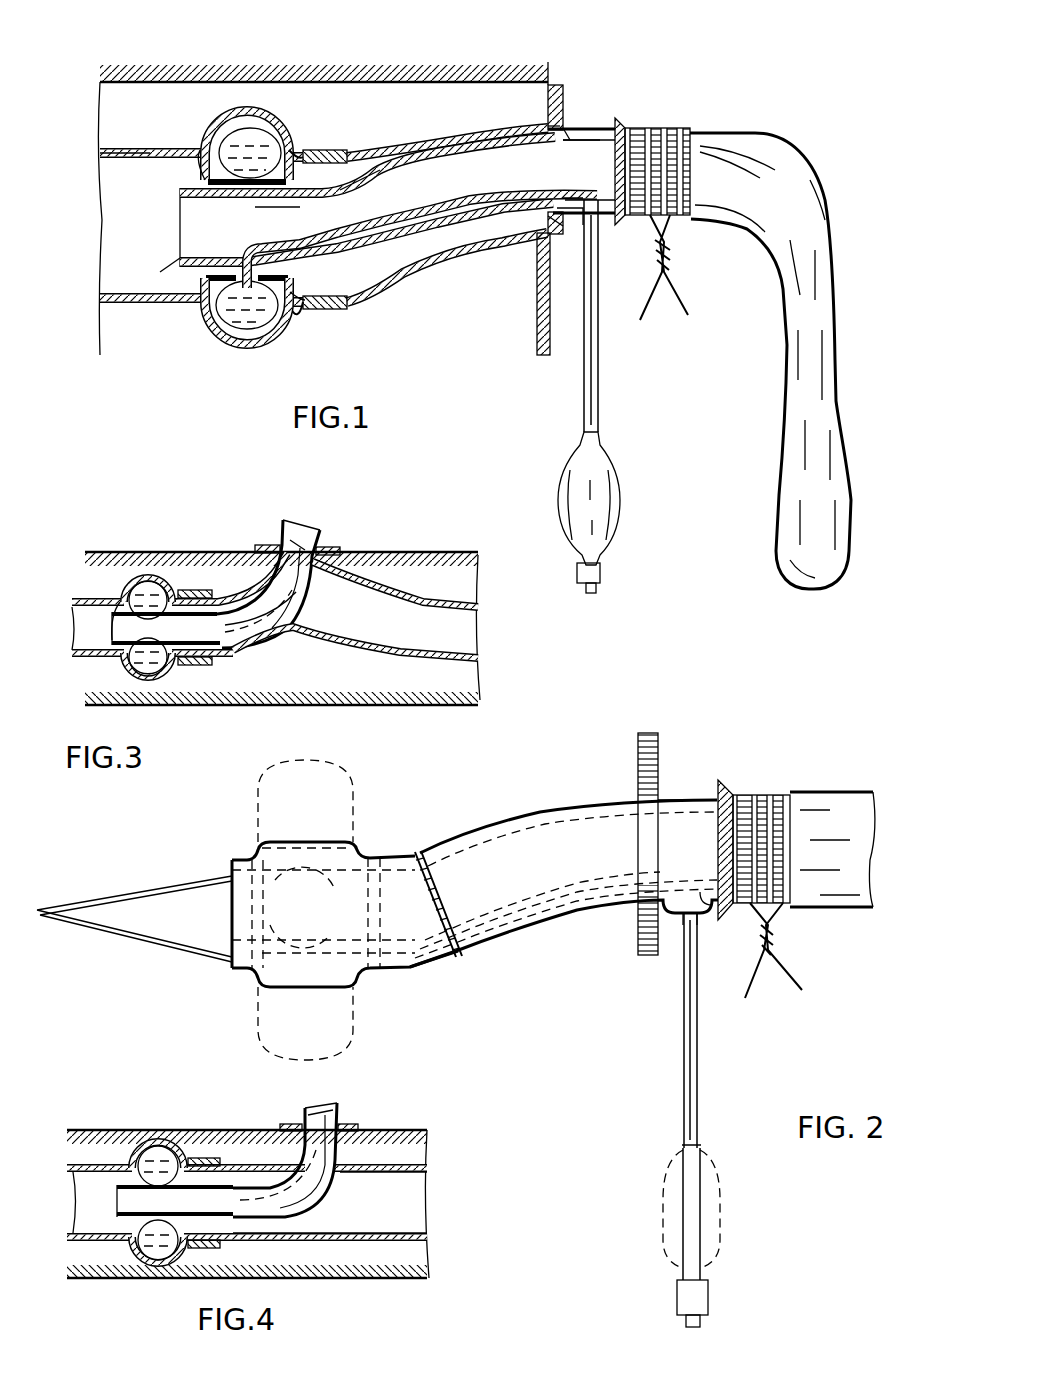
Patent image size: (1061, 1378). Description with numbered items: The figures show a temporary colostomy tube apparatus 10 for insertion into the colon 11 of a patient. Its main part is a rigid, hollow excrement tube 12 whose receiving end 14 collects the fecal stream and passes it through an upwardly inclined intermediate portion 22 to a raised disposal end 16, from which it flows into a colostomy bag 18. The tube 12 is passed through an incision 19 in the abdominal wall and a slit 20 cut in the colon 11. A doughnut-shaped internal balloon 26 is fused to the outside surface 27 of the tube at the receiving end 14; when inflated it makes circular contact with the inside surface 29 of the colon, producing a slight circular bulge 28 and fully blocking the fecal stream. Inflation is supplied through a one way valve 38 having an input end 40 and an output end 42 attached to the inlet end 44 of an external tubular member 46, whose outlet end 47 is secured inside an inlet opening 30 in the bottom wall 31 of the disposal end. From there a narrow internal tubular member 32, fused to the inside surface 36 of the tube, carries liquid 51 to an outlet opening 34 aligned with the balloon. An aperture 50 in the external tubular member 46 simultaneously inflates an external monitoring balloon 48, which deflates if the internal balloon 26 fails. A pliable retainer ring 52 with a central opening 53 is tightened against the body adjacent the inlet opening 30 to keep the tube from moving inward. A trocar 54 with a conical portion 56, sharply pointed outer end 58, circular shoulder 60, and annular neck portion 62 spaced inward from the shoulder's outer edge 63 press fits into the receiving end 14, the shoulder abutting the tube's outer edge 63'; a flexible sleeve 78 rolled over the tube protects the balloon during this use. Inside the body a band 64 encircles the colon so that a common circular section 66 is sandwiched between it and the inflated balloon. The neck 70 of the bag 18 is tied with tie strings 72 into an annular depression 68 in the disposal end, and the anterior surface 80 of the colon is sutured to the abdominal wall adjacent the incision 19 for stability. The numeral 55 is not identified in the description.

In FIG. 1, the temporary colostomy tube apparatus 10 is at (722, 440).
In FIG. 2, the temporary colostomy tube apparatus 10 is at (818, 762).
In FIG. 1, the colon 11 is at (122, 150).
In FIG. 3, the colon 11 is at (270, 690).
In FIG. 4, the colon 11 is at (100, 1240).
In FIG. 1, the excrement tube 12 is at (583, 128).
In FIG. 3, the excrement tube 12 is at (338, 632).
In FIG. 2, the excrement tube 12 is at (586, 805).
In FIG. 4, the excrement tube 12 is at (332, 1190).
In FIG. 1, the receiving end 14 is at (180, 225).
In FIG. 3, the receiving end 14 is at (112, 640).
In FIG. 2, the receiving end 14 is at (232, 858).
In FIG. 4, the receiving end 14 is at (117, 1185).
In FIG. 1, the disposal end 16 is at (618, 128).
In FIG. 3, the disposal end 16 is at (290, 518).
In FIG. 2, the disposal end 16 is at (690, 800).
In FIG. 4, the disposal end 16 is at (330, 1125).
In FIG. 1, the colostomy bag 18 is at (828, 405).
In FIG. 2, the colostomy bag 18 is at (852, 908).
In FIG. 1, the incision 19 is at (548, 125).
In FIG. 3, the incision 19 is at (262, 545).
In FIG. 4, the incision 19 is at (288, 1124).
In FIG. 3, the slit 20 is at (318, 530).
In FIG. 4, the slit 20 is at (345, 1165).
In FIG. 1, the intermediate portion 22 is at (395, 163).
In FIG. 3, the intermediate portion 22 is at (270, 630).
In FIG. 2, the intermediate portion 22 is at (512, 818).
In FIG. 4, the intermediate portion 22 is at (330, 1215).
In FIG. 1, the internal balloon 26 is at (202, 148).
In FIG. 3, the internal balloon 26 is at (118, 605).
In FIG. 2, the internal balloon 26 is at (330, 770).
In FIG. 4, the internal balloon 26 is at (128, 1165).
In FIG. 1, the outside surface 27 is at (300, 198).
In FIG. 2, the outside surface 27 is at (425, 850).
In FIG. 1, the circular bulge 28 is at (250, 108).
In FIG. 3, the circular bulge 28 is at (140, 574).
In FIG. 4, the circular bulge 28 is at (150, 1140).
In FIG. 1, the inside surface 29 is at (200, 155).
In FIG. 4, the inside surface 29 is at (75, 1190).
In FIG. 1, the inlet opening 30 is at (600, 225).
In FIG. 2, the inlet opening 30 is at (700, 920).
In FIG. 1, the bottom wall 31 is at (540, 270).
In FIG. 2, the bottom wall 31 is at (718, 905).
In FIG. 1, the internal tubular member 32 is at (380, 226).
In FIG. 2, the internal tubular member 32 is at (553, 928).
In FIG. 1, the outlet opening 34 is at (322, 300).
In FIG. 2, the outlet opening 34 is at (398, 970).
In FIG. 1, the inside surface 36 is at (530, 146).
In FIG. 2, the inside surface 36 is at (540, 824).
In FIG. 1, the one way valve 38 is at (600, 572).
In FIG. 2, the one way valve 38 is at (710, 1300).
In FIG. 1, the input end 40 is at (594, 593).
In FIG. 2, the input end 40 is at (702, 1325).
In FIG. 2, the output end 42 is at (703, 1283).
In FIG. 2, the inlet end 44 is at (705, 1270).
In FIG. 1, the external tubular member 46 is at (598, 393).
In FIG. 2, the external tubular member 46 is at (700, 1065).
In FIG. 2, the outlet end 47 is at (667, 913).
In FIG. 1, the external monitoring balloon 48 is at (620, 490).
In FIG. 2, the external monitoring balloon 48 is at (715, 1200).
In FIG. 2, the aperture 50 is at (712, 1170).
In FIG. 1, the liquid 51 is at (235, 162).
In FIG. 3, the liquid 51 is at (150, 678).
In FIG. 4, the liquid 51 is at (150, 1262).
In FIG. 1, the retainer ring 52 is at (553, 85).
In FIG. 3, the retainer ring 52 is at (325, 548).
In FIG. 2, the retainer ring 52 is at (656, 733).
In FIG. 4, the retainer ring 52 is at (348, 1124).
In FIG. 1, the central opening 53 is at (565, 128).
In FIG. 3, the central opening 53 is at (283, 540).
In FIG. 2, the trocar 54 is at (135, 950).
In FIG. 4, the pipe wall 55 is at (235, 1130).
In FIG. 2, the conical portion 56 is at (105, 912).
In FIG. 2, the pointed outer end 58 is at (37, 910).
In FIG. 2, the circular shoulder 60 is at (232, 902).
In FIG. 2, the neck portion 62 is at (311, 907).
In FIG. 2, the outer edge 63 is at (192, 980).
In FIG. 1, the outer edge 63' is at (110, 284).
In FIG. 2, the outer edge 63' is at (211, 1005).
In FIG. 1, the band 64 is at (330, 150).
In FIG. 3, the band 64 is at (200, 665).
In FIG. 4, the band 64 is at (200, 1250).
In FIG. 1, the common circular section 66 is at (292, 150).
In FIG. 3, the common circular section 66 is at (165, 577).
In FIG. 4, the common circular section 66 is at (172, 1145).
In FIG. 1, the annular depression 68 is at (700, 135).
In FIG. 2, the annular depression 68 is at (800, 830).
In FIG. 1, the neck 70 is at (668, 128).
In FIG. 2, the neck 70 is at (775, 795).
In FIG. 1, the tie strings 72 is at (685, 318).
In FIG. 2, the tie strings 72 is at (808, 978).
In FIG. 2, the sleeve 78 is at (438, 892).
In FIG. 3, the anterior surface 80 is at (360, 557).
In FIG. 4, the anterior surface 80 is at (427, 1155).